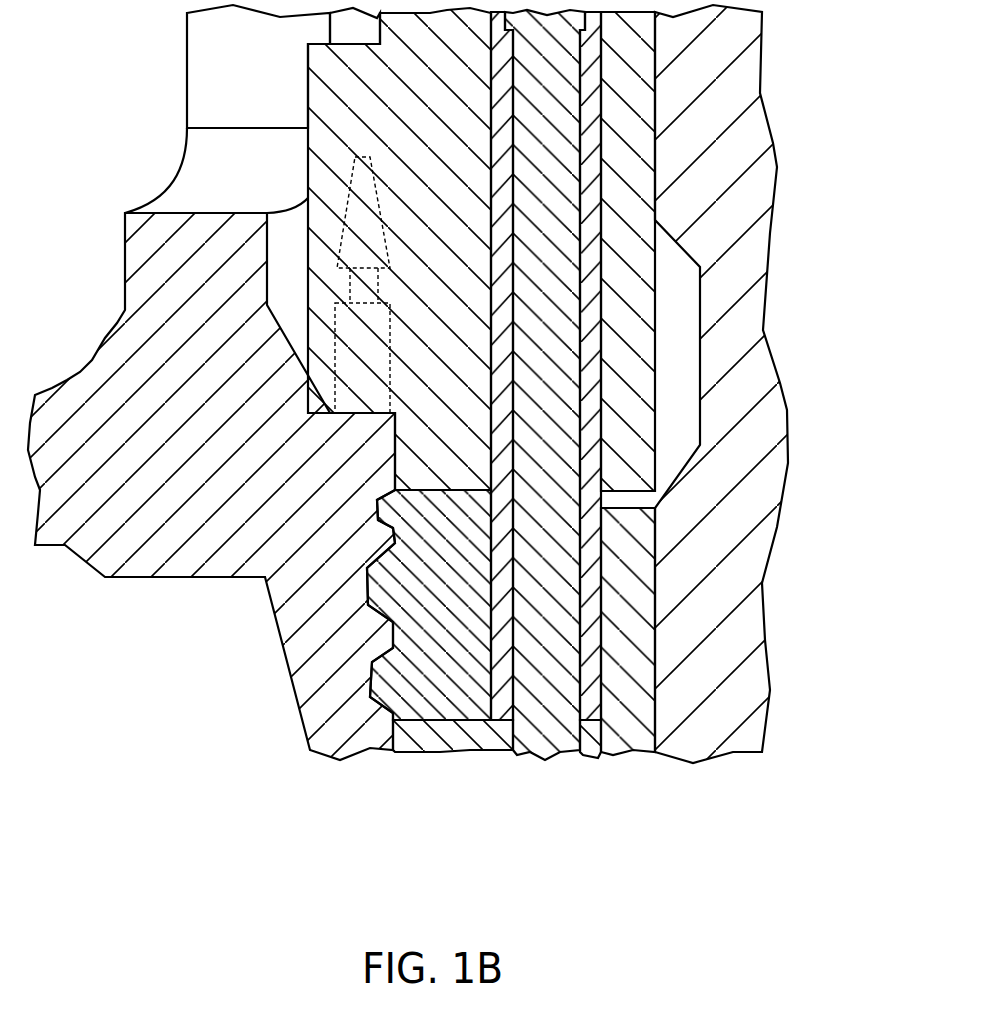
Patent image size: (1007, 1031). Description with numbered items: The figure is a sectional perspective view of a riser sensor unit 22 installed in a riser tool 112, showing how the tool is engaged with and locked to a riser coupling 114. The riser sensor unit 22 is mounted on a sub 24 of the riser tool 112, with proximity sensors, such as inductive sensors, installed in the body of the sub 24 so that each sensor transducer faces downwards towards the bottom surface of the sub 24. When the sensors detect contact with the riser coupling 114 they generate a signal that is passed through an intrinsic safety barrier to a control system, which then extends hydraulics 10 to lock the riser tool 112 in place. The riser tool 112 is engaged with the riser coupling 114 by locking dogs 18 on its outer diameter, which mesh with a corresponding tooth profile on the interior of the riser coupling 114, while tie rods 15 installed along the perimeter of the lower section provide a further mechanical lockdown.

The hydraulics 10 is at (593, 352).
The tie rods 15 is at (545, 428).
The locking dogs 18 is at (432, 687).
The riser sensor unit 22 is at (332, 352).
The sub 24 is at (270, 182).
The riser tool 112 is at (757, 133).
The riser coupling 114 is at (160, 312).